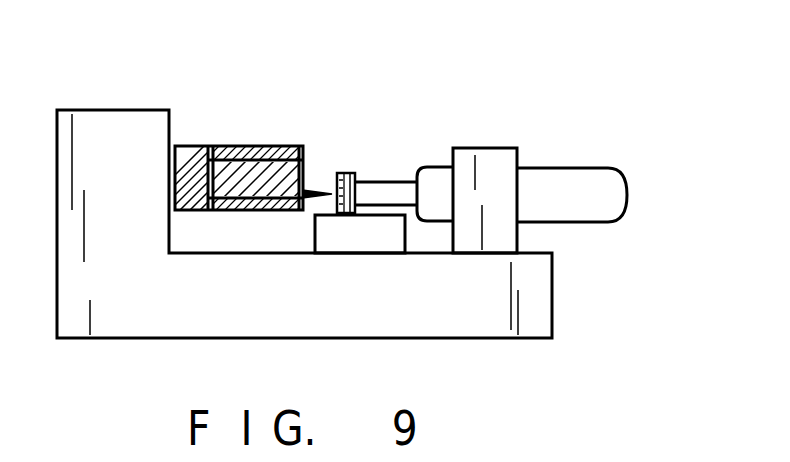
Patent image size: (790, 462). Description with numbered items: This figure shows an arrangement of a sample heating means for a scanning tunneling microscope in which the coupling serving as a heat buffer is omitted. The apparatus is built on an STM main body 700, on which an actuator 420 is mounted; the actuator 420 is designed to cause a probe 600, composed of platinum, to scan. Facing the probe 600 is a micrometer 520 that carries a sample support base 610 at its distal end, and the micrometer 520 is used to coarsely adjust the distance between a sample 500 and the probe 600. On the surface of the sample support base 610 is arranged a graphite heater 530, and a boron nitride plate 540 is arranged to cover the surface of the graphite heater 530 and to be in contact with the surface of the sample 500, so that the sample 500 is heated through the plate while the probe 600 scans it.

The actuator 420 is at (245, 146).
The probe 600 is at (316, 188).
The sample 500 is at (342, 173).
The boron nitride plate 540 is at (349, 173).
The graphite heater 530 is at (418, 153).
The sample support base 610 is at (457, 192).
The micrometer 520 is at (612, 168).
The STM main body 700 is at (547, 291).